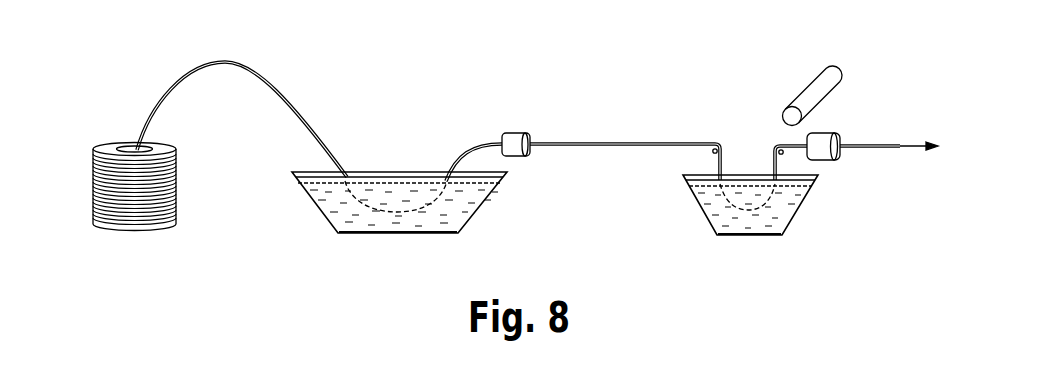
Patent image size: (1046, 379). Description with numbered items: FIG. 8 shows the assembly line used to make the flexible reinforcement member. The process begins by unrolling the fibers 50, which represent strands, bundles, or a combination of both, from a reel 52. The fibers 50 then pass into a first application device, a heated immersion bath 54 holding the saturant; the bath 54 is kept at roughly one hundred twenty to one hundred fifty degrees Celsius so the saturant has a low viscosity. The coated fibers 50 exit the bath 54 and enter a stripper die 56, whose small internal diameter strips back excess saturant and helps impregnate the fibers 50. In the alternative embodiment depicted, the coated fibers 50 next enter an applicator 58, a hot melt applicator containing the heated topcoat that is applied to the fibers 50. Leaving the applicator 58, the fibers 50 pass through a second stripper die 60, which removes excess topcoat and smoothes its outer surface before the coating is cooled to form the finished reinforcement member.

The fibers 50 is at (303, 112).
The reel 52 is at (177, 200).
The heated immersion bath 54 is at (493, 190).
The stripper die 56 is at (512, 133).
The applicator 58 is at (804, 198).
The second stripper die 60 is at (822, 133).